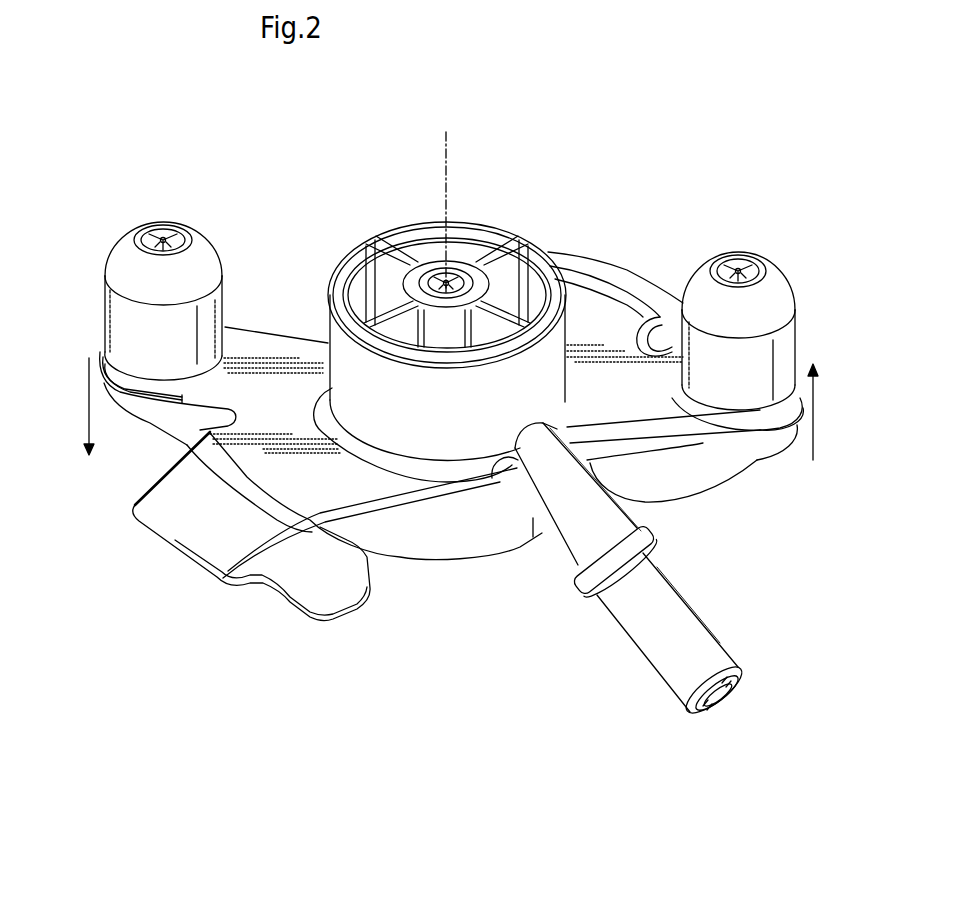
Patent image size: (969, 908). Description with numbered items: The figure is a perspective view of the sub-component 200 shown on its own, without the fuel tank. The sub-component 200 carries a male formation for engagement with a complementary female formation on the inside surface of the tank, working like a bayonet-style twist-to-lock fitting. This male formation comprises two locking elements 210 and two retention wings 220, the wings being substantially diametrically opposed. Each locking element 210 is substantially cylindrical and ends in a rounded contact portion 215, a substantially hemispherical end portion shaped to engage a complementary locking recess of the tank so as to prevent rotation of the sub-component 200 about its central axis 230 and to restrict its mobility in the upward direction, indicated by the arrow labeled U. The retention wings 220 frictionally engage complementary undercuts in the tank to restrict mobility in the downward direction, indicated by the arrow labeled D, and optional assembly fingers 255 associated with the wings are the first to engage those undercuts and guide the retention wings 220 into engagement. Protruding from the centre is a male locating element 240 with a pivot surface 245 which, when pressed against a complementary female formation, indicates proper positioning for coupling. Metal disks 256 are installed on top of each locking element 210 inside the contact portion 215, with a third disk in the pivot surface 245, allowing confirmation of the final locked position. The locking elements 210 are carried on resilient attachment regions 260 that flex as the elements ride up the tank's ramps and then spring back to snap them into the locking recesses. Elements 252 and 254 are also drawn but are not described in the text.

The sub-component 200 is at (597, 147).
The locking element 210 is at (210, 310).
The rounded contact portion 215 is at (197, 254).
The retention wing 220 is at (618, 273).
The central axis 230 is at (446, 150).
The male locating element 240 is at (336, 246).
The pivot surface 245 is at (466, 260).
The outlet opening 252 is at (722, 700).
The outlet spigot 254 is at (660, 602).
The assembly finger 255 is at (337, 585).
The metal disk 256 is at (153, 226).
The attachment region 260 is at (280, 353).